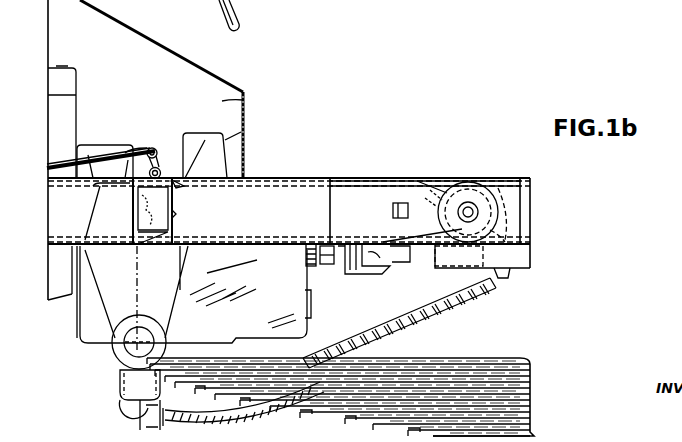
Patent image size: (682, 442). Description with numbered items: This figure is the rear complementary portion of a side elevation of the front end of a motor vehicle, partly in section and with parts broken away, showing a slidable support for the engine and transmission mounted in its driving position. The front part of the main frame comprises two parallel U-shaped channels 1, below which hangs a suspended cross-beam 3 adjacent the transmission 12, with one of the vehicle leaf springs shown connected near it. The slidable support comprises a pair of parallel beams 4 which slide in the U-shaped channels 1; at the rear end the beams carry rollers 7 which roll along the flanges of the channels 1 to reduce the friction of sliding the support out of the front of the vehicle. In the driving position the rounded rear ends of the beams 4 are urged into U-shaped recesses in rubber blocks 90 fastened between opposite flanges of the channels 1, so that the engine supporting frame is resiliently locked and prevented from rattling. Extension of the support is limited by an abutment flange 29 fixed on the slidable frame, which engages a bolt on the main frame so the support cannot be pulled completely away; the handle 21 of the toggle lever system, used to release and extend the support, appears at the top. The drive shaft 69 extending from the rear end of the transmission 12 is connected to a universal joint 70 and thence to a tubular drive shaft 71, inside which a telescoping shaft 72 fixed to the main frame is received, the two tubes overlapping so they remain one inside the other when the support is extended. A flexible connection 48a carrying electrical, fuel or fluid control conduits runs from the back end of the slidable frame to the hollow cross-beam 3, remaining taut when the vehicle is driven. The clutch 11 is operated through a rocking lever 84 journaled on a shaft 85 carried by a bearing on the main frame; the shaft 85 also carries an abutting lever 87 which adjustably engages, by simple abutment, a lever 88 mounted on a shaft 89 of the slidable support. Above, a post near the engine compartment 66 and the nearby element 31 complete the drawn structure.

The U-shaped channel 1 is at (300, 179).
The suspended cross-beam 3 is at (122, 387).
The parallel beam 4 is at (388, 180).
The roller 7 is at (481, 183).
The clutch 11 is at (112, 148).
The transmission 12 is at (272, 339).
The handle 21 is at (228, 29).
The abutment flange 29 is at (412, 201).
The post 31 is at (246, 129).
The flexible connection 48a is at (246, 416).
The compartment 66 is at (244, 99).
The drive shaft 69 is at (323, 264).
The universal joint 70 is at (377, 272).
The tubular drive shaft 71 is at (526, 272).
The telescoping shaft 72 is at (456, 268).
The rocking lever 84 is at (151, 148).
The shaft 85 is at (161, 167).
The abutting lever 87 is at (185, 187).
The lever 88 is at (137, 213).
The shaft 89 is at (178, 217).
The rubber block 90 is at (504, 190).